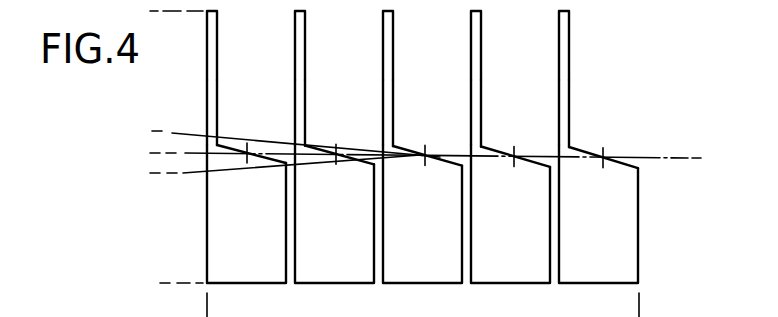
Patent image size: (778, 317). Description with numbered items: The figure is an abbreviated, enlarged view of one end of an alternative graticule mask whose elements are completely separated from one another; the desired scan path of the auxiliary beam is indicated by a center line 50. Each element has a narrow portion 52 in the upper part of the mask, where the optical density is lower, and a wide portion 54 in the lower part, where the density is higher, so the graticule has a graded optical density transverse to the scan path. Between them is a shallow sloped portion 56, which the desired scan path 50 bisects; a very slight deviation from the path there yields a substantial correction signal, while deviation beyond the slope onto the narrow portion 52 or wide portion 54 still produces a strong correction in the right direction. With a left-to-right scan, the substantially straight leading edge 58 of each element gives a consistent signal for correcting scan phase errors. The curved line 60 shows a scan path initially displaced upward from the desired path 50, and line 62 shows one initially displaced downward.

The center line 50 is at (177, 153).
The narrow portion 52 is at (298, 40).
The wide portion 54 is at (232, 230).
The sloped portion 56 is at (227, 150).
The leading edge 58 is at (294, 80).
The curved line 60 is at (183, 133).
The line 62 is at (183, 175).